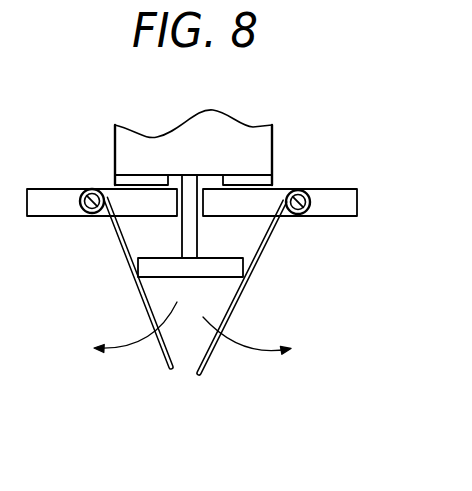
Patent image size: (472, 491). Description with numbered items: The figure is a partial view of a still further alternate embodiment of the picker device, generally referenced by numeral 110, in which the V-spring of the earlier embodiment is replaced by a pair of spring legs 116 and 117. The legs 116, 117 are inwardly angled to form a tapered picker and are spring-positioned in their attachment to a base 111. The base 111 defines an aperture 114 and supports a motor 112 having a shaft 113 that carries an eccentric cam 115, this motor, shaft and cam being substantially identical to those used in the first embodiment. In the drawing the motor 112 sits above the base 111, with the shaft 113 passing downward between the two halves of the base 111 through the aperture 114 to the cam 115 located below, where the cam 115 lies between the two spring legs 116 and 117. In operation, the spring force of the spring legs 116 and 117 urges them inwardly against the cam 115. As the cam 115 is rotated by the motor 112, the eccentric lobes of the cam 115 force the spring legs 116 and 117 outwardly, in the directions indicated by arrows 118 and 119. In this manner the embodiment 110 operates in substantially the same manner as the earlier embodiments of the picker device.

The picker device embodiment 110 is at (330, 330).
The base 111 is at (323, 207).
The motor 112 is at (234, 147).
The shaft 113 is at (199, 235).
The aperture 114 is at (178, 208).
The eccentric cam 115 is at (222, 269).
The spring leg 116 is at (130, 272).
The spring leg 117 is at (230, 313).
The arrow 118 is at (136, 347).
The arrow 119 is at (255, 353).